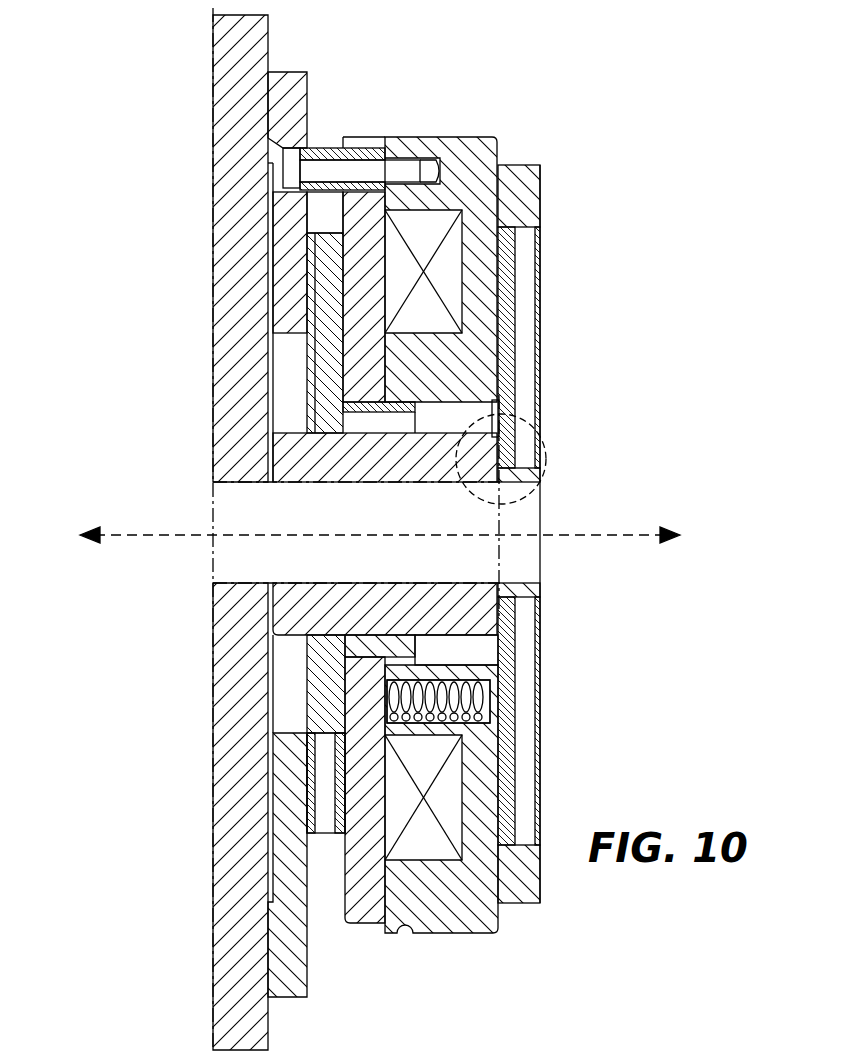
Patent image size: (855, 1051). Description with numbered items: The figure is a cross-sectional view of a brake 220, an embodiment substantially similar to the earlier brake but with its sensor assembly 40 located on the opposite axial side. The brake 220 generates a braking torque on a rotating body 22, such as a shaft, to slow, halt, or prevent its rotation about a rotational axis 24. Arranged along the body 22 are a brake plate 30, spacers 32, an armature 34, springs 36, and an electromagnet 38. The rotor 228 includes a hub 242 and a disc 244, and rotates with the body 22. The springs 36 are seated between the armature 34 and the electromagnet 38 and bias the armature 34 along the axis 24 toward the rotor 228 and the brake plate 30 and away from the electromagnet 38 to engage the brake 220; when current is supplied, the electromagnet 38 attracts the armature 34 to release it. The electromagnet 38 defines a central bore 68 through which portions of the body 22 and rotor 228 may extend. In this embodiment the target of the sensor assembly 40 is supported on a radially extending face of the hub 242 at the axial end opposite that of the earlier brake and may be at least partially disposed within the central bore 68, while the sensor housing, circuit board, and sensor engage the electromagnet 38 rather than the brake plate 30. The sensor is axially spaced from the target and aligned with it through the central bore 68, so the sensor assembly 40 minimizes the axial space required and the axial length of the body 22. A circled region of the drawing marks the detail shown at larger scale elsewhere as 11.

The brake 220 is at (146, 150).
The brake plate 30 is at (305, 118).
The spacers 32 is at (340, 160).
The armature 34 is at (360, 213).
The electromagnet 38 is at (487, 145).
The rotor 228 is at (295, 365).
The sensor assembly 40 is at (500, 436).
The detail circle 11 is at (477, 473).
The rotational axis 24 is at (148, 538).
The rotating body 22 is at (432, 560).
The hub 242 is at (291, 613).
The disc 244 is at (320, 679).
The central bore 68 is at (467, 653).
The springs 36 is at (428, 705).